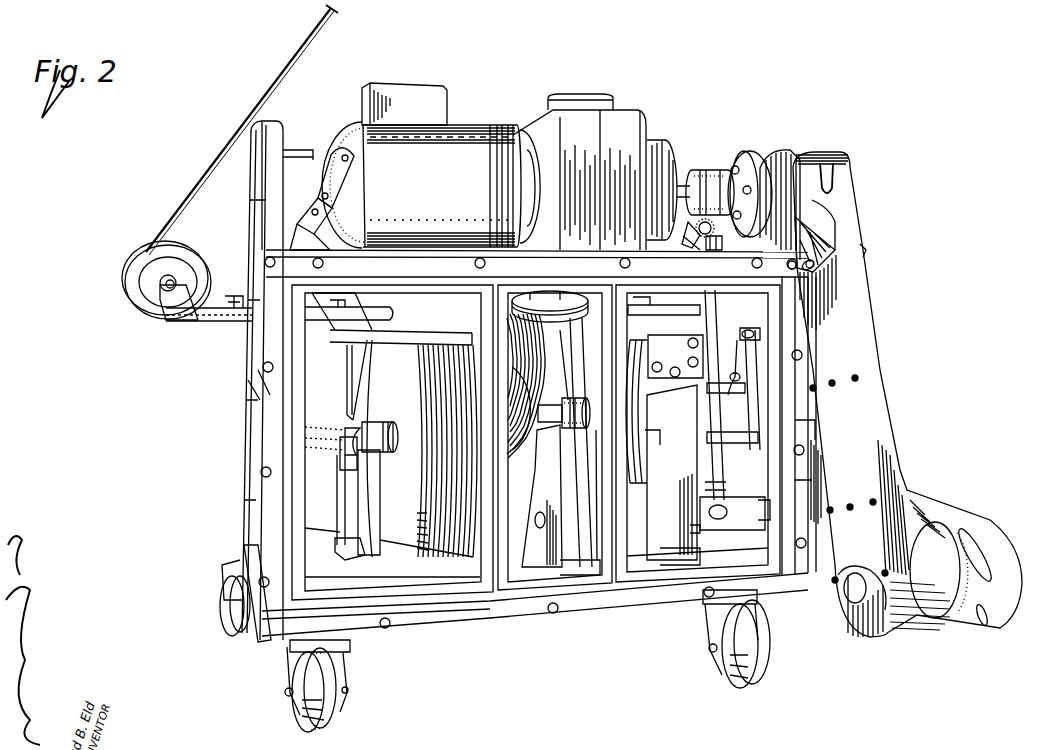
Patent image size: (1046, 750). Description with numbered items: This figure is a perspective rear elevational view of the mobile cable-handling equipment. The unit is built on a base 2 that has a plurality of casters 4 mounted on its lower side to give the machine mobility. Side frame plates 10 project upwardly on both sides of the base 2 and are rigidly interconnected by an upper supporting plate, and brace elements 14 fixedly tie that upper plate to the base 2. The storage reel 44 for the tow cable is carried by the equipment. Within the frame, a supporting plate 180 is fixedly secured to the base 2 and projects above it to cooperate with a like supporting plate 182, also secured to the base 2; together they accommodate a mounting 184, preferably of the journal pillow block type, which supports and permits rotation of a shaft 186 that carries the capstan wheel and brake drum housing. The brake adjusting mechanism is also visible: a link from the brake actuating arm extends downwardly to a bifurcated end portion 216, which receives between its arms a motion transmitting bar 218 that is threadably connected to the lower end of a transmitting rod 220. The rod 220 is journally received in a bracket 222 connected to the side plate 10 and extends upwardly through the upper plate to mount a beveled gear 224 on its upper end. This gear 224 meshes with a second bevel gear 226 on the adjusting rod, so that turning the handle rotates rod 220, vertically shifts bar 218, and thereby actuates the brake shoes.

The base 2 is at (364, 580).
The casters 4 is at (328, 682).
The side frame plates 10 is at (263, 440).
The brace elements 14 is at (500, 555).
The storage reel 44 is at (417, 501).
The supporting plate 180 is at (577, 575).
The supporting plate 182 is at (677, 560).
The mounting 184 is at (548, 384).
The shaft 186 is at (559, 442).
The bifurcated end portion 216 is at (710, 530).
The motion transmitting bar 218 is at (728, 488).
The transmitting rod 220 is at (725, 470).
The bracket 222 is at (742, 360).
The beveled gear 224 is at (716, 248).
The second bevel gear 226 is at (692, 230).